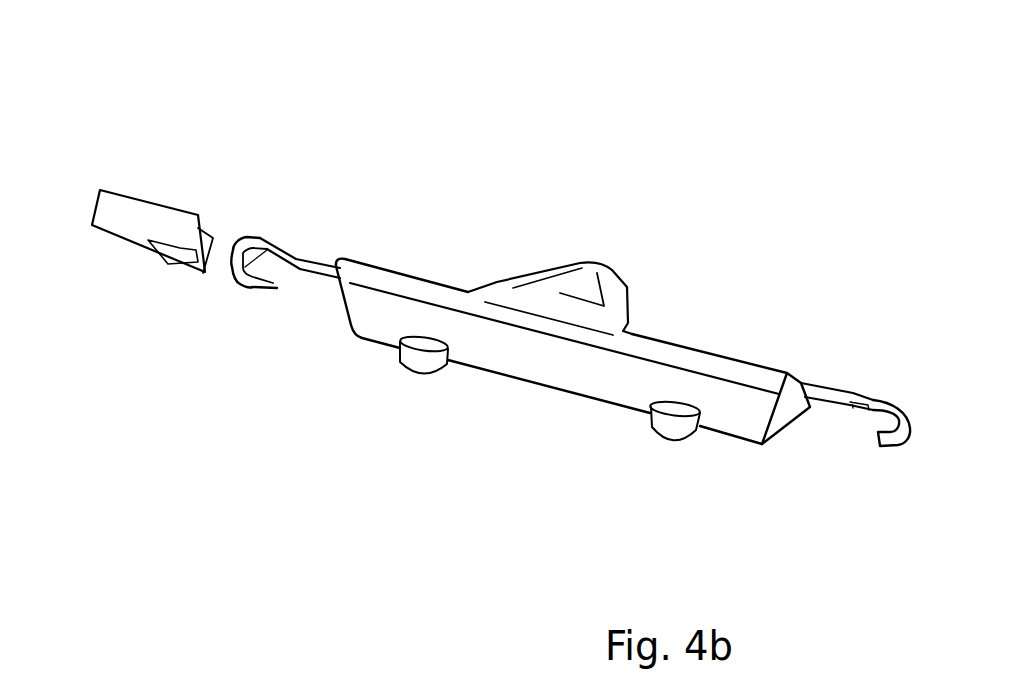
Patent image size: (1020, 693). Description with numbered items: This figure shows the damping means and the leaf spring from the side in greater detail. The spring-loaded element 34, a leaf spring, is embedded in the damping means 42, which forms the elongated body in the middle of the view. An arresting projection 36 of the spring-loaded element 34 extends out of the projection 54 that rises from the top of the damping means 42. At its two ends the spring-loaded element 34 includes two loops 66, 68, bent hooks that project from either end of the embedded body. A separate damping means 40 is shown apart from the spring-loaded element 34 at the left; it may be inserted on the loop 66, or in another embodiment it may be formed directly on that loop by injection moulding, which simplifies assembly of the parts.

The damping means 40 is at (135, 227).
The spring-loaded element 34 is at (323, 250).
The projection 54 is at (504, 298).
The arresting projection 36 is at (592, 262).
The damping means 42 is at (685, 363).
The loop 66 is at (275, 290).
The loop 68 is at (910, 447).